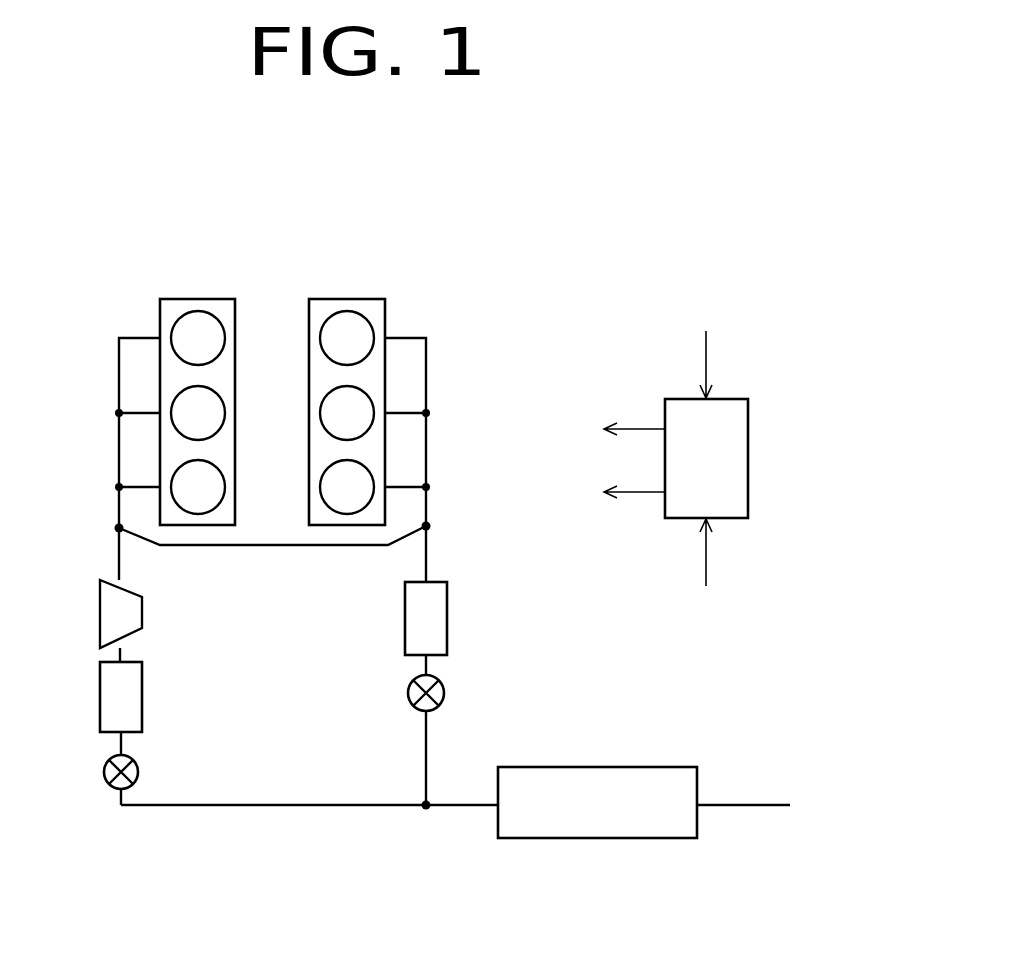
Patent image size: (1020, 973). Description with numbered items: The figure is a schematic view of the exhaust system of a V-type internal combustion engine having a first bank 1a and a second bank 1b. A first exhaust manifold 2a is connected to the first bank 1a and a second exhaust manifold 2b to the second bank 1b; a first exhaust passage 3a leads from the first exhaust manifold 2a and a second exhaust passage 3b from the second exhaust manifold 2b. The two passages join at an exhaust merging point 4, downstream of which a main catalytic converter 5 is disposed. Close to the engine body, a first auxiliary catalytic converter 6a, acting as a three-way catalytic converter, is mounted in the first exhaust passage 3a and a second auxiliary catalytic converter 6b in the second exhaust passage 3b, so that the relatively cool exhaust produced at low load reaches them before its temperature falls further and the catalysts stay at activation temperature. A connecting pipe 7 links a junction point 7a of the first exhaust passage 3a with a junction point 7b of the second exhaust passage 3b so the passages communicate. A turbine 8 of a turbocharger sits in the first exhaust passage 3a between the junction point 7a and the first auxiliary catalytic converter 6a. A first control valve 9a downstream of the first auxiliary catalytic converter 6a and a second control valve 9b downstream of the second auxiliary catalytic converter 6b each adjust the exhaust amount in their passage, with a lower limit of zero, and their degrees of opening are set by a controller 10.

The first bank 1a is at (180, 298).
The second bank 1b is at (330, 298).
The first exhaust manifold 2a is at (118, 451).
The second exhaust manifold 2b is at (427, 452).
The first exhaust passage 3a is at (118, 557).
The second exhaust passage 3b is at (428, 557).
The exhaust merging point 4 is at (426, 808).
The main catalytic converter 5 is at (633, 781).
The first auxiliary catalytic converter 6a is at (110, 700).
The second auxiliary catalytic converter 6b is at (437, 625).
The connecting pipe 7 is at (282, 547).
The junction point 7a is at (118, 528).
The junction point 7b is at (427, 525).
The turbine 8 is at (108, 617).
The first control valve 9a is at (108, 773).
The second control valve 9b is at (444, 690).
The controller 10 is at (735, 457).